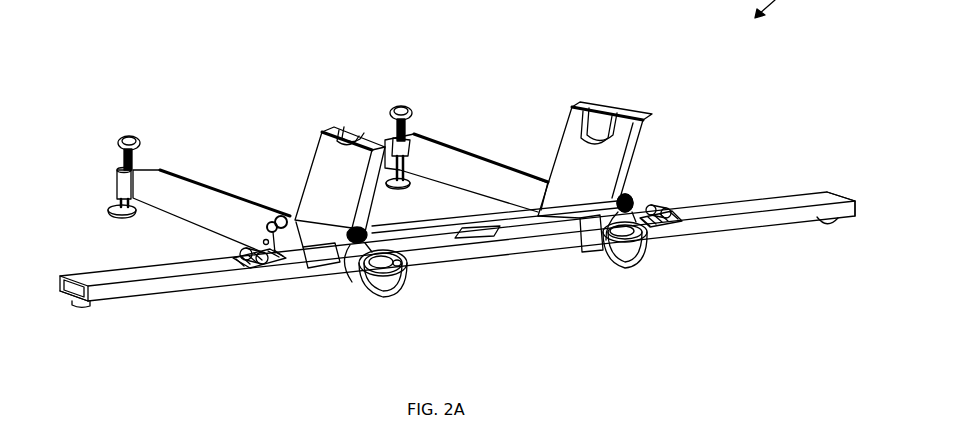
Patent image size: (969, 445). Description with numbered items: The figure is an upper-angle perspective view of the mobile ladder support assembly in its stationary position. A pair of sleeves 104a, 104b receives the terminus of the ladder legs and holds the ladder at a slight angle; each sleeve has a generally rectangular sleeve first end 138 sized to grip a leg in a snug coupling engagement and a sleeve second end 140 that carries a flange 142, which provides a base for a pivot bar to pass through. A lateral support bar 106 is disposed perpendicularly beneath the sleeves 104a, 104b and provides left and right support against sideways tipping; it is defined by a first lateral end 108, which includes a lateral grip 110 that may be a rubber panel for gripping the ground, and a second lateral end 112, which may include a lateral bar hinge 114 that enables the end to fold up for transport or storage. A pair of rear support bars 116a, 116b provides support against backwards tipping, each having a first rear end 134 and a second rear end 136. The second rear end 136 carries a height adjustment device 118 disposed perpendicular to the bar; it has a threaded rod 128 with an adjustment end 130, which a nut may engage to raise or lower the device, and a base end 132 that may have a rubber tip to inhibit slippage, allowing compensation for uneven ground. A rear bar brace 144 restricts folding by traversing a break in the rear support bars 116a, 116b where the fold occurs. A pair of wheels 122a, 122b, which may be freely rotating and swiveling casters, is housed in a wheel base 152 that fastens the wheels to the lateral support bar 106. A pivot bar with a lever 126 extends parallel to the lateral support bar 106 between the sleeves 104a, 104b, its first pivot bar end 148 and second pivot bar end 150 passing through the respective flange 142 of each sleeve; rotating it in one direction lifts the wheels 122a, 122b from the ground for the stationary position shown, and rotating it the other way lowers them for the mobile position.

The sleeve 104a is at (305, 172).
The sleeve 104b is at (557, 147).
The lateral support bar 106 is at (187, 290).
The first lateral end 108 is at (58, 285).
The lateral grip 110 is at (97, 300).
The second lateral end 112 is at (830, 192).
The lateral bar hinge 114 is at (263, 263).
The rear support bar 116a is at (210, 183).
The rear support bar 116b is at (473, 148).
The height adjustment device 118 is at (82, 145).
The wheel 122a is at (370, 288).
The wheel 122b is at (633, 265).
The lever 126 is at (486, 236).
The threaded rod 128 is at (133, 160).
The adjustment end 130 is at (126, 138).
The base end 132 is at (104, 211).
The first rear end 134 is at (266, 216).
The second rear end 136 is at (117, 187).
The sleeve first end 138 is at (330, 131).
The sleeve second end 140 is at (318, 220).
The flange 142 is at (353, 227).
The rear bar brace 144 is at (270, 229).
The first pivot bar end 148 is at (398, 235).
The second pivot bar end 150 is at (627, 193).
The wheel base 152 is at (345, 242).